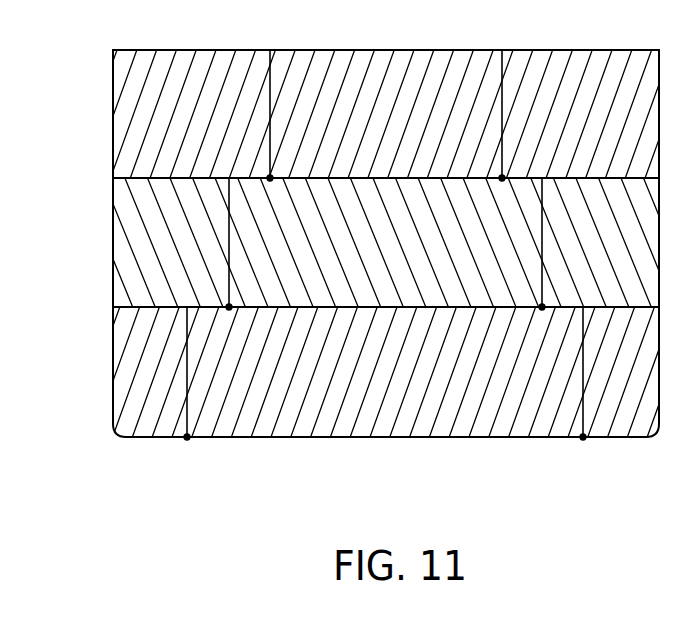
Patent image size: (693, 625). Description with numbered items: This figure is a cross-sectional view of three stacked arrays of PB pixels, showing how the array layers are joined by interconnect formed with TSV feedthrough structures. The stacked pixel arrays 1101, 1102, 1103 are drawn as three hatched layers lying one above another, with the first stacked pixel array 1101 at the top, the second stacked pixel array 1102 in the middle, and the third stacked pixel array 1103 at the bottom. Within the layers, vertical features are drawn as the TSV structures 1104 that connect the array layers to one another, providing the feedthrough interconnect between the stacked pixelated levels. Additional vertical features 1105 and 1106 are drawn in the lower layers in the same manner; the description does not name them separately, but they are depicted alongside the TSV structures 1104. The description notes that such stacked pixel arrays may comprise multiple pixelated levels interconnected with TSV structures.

The stacked pixel array 1101 is at (104, 50).
The stacked pixel array 1102 is at (104, 178).
The stacked pixel array 1103 is at (104, 308).
The TSV structure 1104 is at (500, 93).
The joint in second layer 1105 is at (542, 272).
The joint in third layer 1106 is at (582, 377).